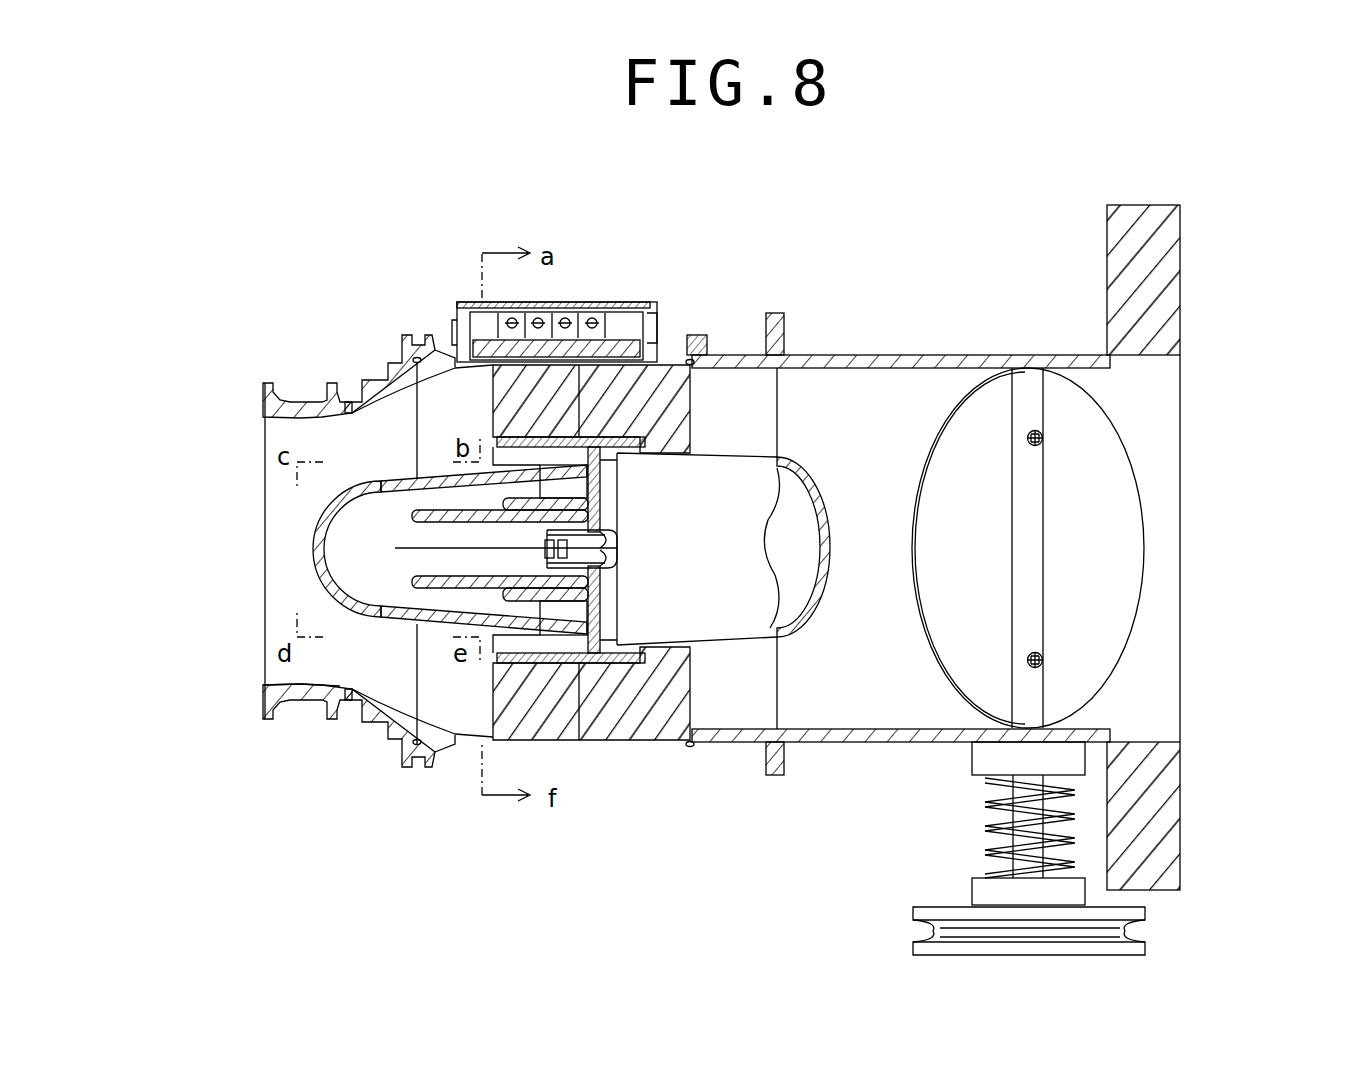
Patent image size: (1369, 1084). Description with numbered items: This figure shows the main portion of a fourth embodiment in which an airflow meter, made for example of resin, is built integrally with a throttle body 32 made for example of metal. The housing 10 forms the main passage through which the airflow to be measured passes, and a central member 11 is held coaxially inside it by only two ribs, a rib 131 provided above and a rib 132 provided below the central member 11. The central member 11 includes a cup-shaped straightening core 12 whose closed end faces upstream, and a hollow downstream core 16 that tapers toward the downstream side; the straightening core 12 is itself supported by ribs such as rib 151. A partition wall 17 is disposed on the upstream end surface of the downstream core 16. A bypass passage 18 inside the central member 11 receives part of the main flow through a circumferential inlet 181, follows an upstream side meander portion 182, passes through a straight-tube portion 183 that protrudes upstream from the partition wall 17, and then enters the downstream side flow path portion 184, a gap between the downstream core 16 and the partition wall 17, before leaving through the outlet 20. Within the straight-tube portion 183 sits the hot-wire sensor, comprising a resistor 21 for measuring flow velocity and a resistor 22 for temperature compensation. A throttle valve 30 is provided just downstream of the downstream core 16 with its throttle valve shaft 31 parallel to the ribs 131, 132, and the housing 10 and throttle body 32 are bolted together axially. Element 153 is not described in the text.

The housing 10 is at (288, 390).
The central member 11 is at (450, 712).
The straightening core 12 is at (313, 578).
The downstream core 16 is at (830, 540).
The partition wall 17 is at (610, 593).
The bypass passage 18 is at (371, 515).
The outlet 20 is at (693, 433).
The resistor for measuring flow velocity 21 is at (395, 548).
The resistor for temperature compensation 22 is at (617, 553).
The throttle valve 30 is at (1107, 527).
The throttle valve shaft 31 is at (1028, 392).
The throttle body 32 is at (1165, 272).
The rib 131 is at (647, 392).
The rib 132 is at (597, 727).
The rib 151 is at (615, 325).
The seal ring 153 is at (420, 572).
The inlet 181 is at (493, 430).
The upstream side meander portion 182 is at (505, 485).
The straight-tube portion 183 is at (307, 685).
The downstream side flow path portion 184 is at (612, 607).